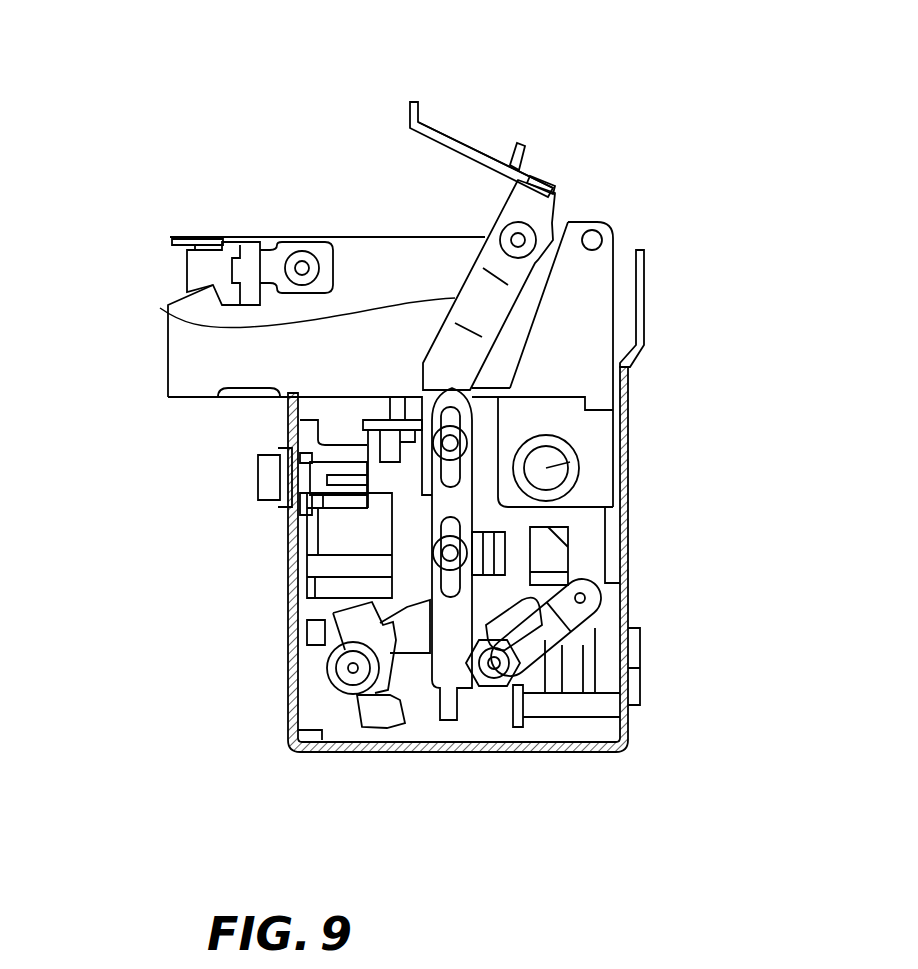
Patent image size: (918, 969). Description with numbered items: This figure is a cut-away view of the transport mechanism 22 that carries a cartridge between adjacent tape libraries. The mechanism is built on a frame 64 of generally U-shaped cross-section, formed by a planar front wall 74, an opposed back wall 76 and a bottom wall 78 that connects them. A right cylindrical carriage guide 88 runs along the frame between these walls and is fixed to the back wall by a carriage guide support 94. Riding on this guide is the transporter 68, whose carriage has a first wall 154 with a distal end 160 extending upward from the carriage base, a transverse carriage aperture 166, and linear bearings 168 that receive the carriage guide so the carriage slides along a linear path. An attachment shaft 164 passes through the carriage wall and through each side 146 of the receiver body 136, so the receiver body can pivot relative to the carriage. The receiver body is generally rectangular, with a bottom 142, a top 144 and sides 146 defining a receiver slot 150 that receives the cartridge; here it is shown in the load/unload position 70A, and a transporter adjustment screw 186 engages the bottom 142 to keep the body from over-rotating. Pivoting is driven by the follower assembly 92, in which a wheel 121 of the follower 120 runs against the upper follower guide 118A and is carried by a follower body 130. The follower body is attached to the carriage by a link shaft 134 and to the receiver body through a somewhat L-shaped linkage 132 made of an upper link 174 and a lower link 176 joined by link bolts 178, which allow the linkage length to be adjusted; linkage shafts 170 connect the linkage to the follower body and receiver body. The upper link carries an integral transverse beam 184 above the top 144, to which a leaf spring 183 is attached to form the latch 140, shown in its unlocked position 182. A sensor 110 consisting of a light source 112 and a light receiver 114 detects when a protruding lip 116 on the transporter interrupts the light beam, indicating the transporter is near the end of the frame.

The transport mechanism 22 is at (717, 232).
The frame 64 is at (632, 568).
The transporter 68 is at (222, 237).
The load/unload position 70A is at (280, 178).
The front wall 74 is at (357, 712).
The back wall 76 is at (632, 618).
The bottom wall 78 is at (548, 754).
The carriage guide 88 is at (560, 468).
The follower assembly 92 is at (117, 768).
The carriage guide support 94 is at (597, 427).
The sensor 110 is at (112, 575).
The light source 112 is at (370, 500).
The light receiver 114 is at (333, 448).
The lip 116 is at (338, 498).
The upper follower guide 118A is at (400, 580).
The follower 120 is at (295, 736).
The wheel 121 is at (380, 717).
The follower body 130 is at (423, 637).
The linkage 132 is at (474, 356).
The link shaft 134 is at (585, 598).
The receiver body 136 is at (370, 235).
The latch 140 is at (418, 100).
The bottom 142 is at (200, 398).
The top 144 is at (440, 236).
The side 146 is at (200, 376).
The receiver slot 150 is at (148, 348).
The first wall 154 is at (583, 365).
The distal end 160 is at (590, 292).
The attachment shaft 164 is at (600, 220).
The carriage aperture 166 is at (560, 490).
The linear bearing 168 is at (567, 450).
The linkage shaft 170 is at (548, 205).
The upper link 174 is at (228, 318).
The lower link 176 is at (330, 667).
The link bolt 178 is at (545, 540).
The unlocked position 182 is at (469, 135).
The leaf spring 183 is at (503, 146).
The transverse beam 184 is at (545, 185).
The transporter adjustment screw 186 is at (300, 413).